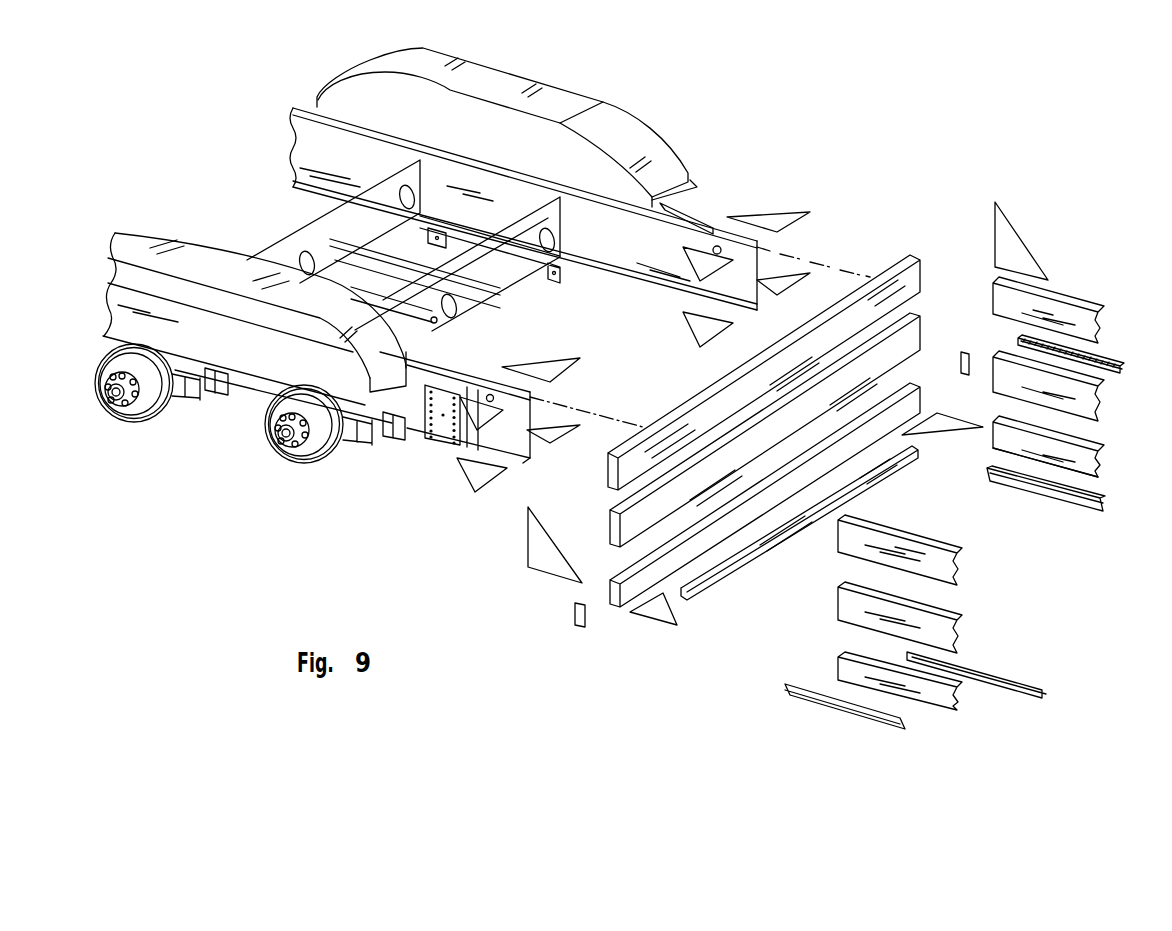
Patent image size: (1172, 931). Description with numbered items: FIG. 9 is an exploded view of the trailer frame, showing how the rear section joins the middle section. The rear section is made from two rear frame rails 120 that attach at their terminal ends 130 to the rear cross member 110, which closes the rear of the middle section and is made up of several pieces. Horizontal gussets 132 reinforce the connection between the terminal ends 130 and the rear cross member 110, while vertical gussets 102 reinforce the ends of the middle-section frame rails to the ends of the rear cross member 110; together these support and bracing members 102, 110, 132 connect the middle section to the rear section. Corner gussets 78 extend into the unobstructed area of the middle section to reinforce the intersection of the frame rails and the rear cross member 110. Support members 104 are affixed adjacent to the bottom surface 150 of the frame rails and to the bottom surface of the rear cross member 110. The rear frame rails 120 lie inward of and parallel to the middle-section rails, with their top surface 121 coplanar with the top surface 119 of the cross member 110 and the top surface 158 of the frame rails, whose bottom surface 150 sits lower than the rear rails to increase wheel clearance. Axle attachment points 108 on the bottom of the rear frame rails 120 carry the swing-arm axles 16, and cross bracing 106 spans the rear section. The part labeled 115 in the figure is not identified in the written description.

The wheel 16 is at (207, 400).
The triangular gusset plate 78 is at (927, 437).
The triangular corner plate 102 is at (1008, 238).
The angle member 104 is at (713, 595).
The cross member 106 is at (463, 288).
The suspension hanger 108 is at (400, 445).
The rear cross beam 110 is at (658, 510).
The side panel set 115 is at (838, 670).
The rear beam 119 is at (910, 256).
The frame rail 120 is at (622, 254).
The rail end plate 121 is at (700, 230).
The rail end 130 is at (757, 298).
The gusset plate 132 is at (787, 283).
The panel lip 150 is at (1060, 468).
The panel 158 is at (930, 484).